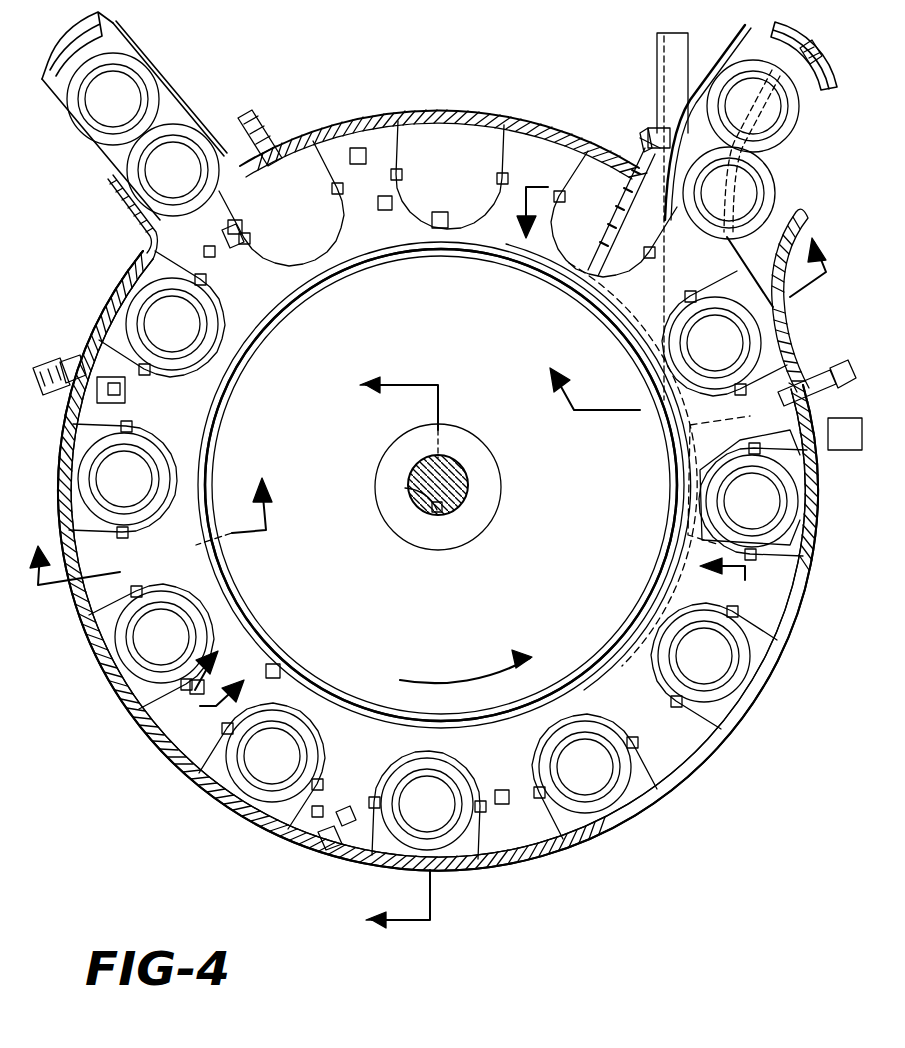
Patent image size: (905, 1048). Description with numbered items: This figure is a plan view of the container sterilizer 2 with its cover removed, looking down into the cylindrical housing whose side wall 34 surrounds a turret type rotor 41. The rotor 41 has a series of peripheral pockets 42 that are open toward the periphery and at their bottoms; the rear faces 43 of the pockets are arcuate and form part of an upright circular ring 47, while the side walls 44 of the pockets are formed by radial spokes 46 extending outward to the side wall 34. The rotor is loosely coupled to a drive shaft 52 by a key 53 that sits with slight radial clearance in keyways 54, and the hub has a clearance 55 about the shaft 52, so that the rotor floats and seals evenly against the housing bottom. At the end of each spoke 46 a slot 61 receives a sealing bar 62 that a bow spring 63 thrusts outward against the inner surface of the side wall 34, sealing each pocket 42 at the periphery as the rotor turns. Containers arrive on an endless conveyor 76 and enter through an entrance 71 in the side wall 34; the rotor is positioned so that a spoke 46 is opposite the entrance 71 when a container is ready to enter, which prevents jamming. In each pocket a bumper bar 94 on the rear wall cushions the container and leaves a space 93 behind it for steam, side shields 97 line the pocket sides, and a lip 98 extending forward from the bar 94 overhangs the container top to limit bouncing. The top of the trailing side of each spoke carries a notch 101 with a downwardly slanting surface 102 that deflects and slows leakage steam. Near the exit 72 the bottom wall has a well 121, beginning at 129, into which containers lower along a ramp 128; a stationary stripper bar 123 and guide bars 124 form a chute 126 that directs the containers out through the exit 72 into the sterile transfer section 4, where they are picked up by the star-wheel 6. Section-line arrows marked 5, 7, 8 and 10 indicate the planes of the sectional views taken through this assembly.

The container sterilizer 2 is at (690, 786).
The sterile transfer section 4 is at (664, 60).
The section line 5 is at (397, 654).
The star-wheel 6 is at (141, 520).
The section line 7 is at (629, 391).
The section line 8 is at (691, 316).
The section line 10 is at (240, 677).
The side wall 34 is at (808, 566).
The rotor 41 is at (668, 452).
The peripheral pockets 42 is at (290, 150).
The rear faces 43 is at (452, 256).
The side walls 44 is at (236, 224).
The radial spokes 46 is at (438, 558).
The upright circular ring 47 is at (396, 255).
The rotor drive shaft 52 is at (468, 480).
The key 53 is at (442, 512).
The keyways 54 is at (418, 486).
The clearance 55 is at (452, 462).
The slot 61 is at (346, 828).
The sealing bar 62 is at (232, 228).
The bow spring 63 is at (210, 256).
The entrance 71 is at (218, 130).
The exit 72 is at (658, 128).
The endless conveyor 76 is at (168, 100).
The space 93 is at (236, 346).
The bumper bar 94 is at (322, 240).
The side shield 97 is at (399, 218).
The lip 98 is at (308, 252).
The notch 101 is at (380, 200).
The downwardly slanting surface 102 is at (368, 174).
The well 121 is at (630, 185).
The stripper bar 123 is at (722, 62).
The guide bars 124 is at (796, 322).
The chute 126 is at (790, 212).
The ramp 128 is at (814, 468).
The beginning of the well 129 is at (682, 548).